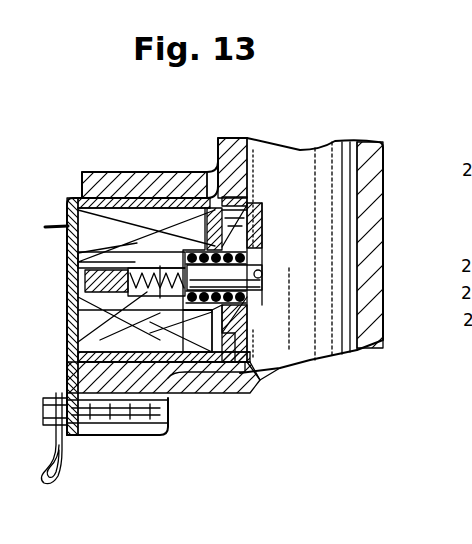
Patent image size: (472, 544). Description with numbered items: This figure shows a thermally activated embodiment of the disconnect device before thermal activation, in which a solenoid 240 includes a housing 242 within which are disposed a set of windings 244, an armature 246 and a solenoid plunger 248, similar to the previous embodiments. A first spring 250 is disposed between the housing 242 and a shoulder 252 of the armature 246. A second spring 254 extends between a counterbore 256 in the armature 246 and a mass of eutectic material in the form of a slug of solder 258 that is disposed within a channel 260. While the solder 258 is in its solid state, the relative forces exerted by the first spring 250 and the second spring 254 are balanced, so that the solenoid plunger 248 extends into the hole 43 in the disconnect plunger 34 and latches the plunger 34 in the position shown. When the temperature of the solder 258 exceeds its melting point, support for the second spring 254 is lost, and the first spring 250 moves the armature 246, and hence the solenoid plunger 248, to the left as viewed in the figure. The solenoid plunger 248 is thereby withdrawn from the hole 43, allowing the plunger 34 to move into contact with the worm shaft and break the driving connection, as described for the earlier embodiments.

The solenoid 240 is at (58, 172).
The set of windings 244 is at (103, 197).
The armature 246 is at (203, 207).
The housing 242 is at (195, 200).
The shoulder 252 is at (250, 179).
The first spring 250 is at (262, 224).
The disconnect plunger 34 is at (333, 198).
The hole 43 is at (260, 276).
The counterbore 256 is at (82, 254).
The slug of solder 258 is at (88, 282).
The channel 260 is at (80, 328).
The second spring 254 is at (80, 354).
The solenoid plunger 248 is at (260, 283).